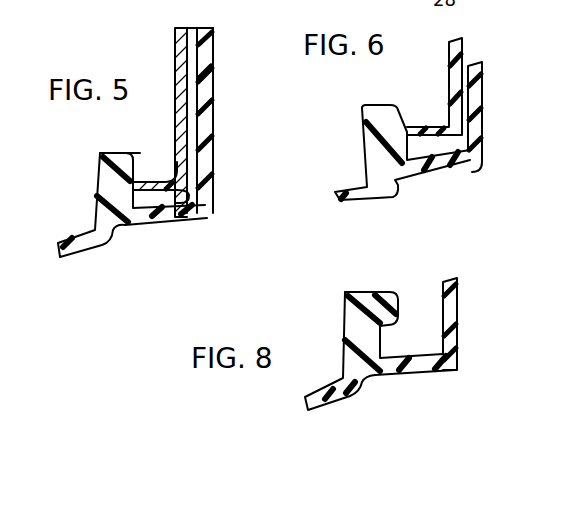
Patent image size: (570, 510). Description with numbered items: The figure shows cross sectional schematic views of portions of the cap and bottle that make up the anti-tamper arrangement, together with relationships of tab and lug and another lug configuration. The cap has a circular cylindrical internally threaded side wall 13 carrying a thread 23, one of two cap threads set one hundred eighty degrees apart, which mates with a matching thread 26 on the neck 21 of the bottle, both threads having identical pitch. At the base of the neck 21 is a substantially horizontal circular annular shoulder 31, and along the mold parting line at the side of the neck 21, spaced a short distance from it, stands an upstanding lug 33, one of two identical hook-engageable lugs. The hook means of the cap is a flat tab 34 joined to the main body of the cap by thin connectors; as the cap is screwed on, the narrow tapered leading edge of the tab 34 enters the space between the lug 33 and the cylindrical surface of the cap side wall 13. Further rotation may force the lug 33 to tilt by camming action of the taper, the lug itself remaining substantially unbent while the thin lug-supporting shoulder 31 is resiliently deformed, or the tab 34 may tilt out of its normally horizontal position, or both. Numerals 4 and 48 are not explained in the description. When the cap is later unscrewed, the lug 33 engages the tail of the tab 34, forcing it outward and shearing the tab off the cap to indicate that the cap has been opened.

In FIG. 6, the plate member 4 is at (433, 128).
In FIG. 5, the side wall 13 is at (177, 70).
In FIG. 8, the neck 21 is at (456, 310).
In FIG. 5, the thread 23 is at (205, 78).
In FIG. 5, the thread 26 is at (188, 40).
In FIG. 5, the shoulder 31 is at (188, 197).
In FIG. 6, the shoulder 31 is at (477, 172).
In FIG. 5, the lug 33 is at (97, 177).
In FIG. 6, the lug 33 is at (372, 121).
In FIG. 8, the lug 33 is at (352, 283).
In FIG. 5, the tab 34 is at (162, 175).
In FIG. 5, the upper arm 48 is at (135, 153).